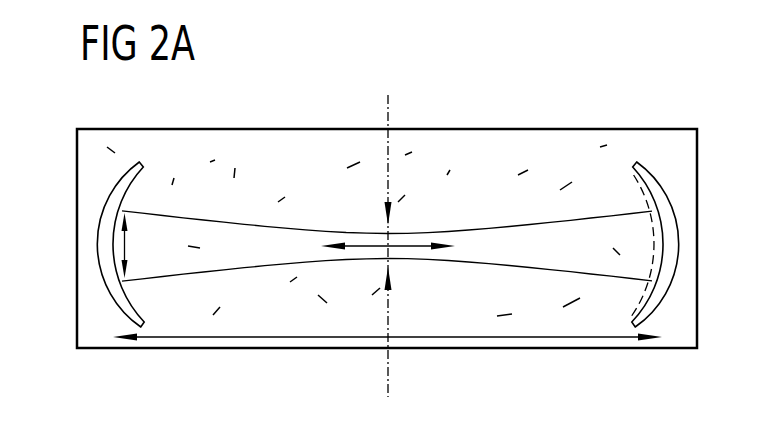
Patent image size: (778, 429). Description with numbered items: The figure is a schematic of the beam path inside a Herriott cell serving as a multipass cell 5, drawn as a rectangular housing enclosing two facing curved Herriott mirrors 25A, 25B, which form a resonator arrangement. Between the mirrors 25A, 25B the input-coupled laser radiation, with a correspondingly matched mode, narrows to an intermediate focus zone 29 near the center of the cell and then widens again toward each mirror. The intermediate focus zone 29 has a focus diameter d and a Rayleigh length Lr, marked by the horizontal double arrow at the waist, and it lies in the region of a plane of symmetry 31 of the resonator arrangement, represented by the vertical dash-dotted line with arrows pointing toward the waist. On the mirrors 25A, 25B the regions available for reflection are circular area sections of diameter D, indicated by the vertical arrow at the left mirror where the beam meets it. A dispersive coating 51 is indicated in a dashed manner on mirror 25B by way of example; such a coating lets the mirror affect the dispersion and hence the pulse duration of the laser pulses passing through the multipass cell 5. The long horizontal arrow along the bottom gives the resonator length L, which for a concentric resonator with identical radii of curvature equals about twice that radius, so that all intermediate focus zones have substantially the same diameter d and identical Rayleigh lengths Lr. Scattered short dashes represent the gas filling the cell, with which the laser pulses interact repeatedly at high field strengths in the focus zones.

The multipass cell 5 is at (522, 128).
The mirror 25A is at (133, 310).
The mirror 25B is at (657, 193).
The intermediate focus zone 29 is at (326, 202).
The plane of symmetry 31 is at (389, 101).
The dispersive coating 51 is at (633, 185).
The diameter D is at (137, 245).
The focus diameter d is at (418, 215).
The Rayleigh length Lr is at (372, 246).
The resonator length L is at (473, 338).